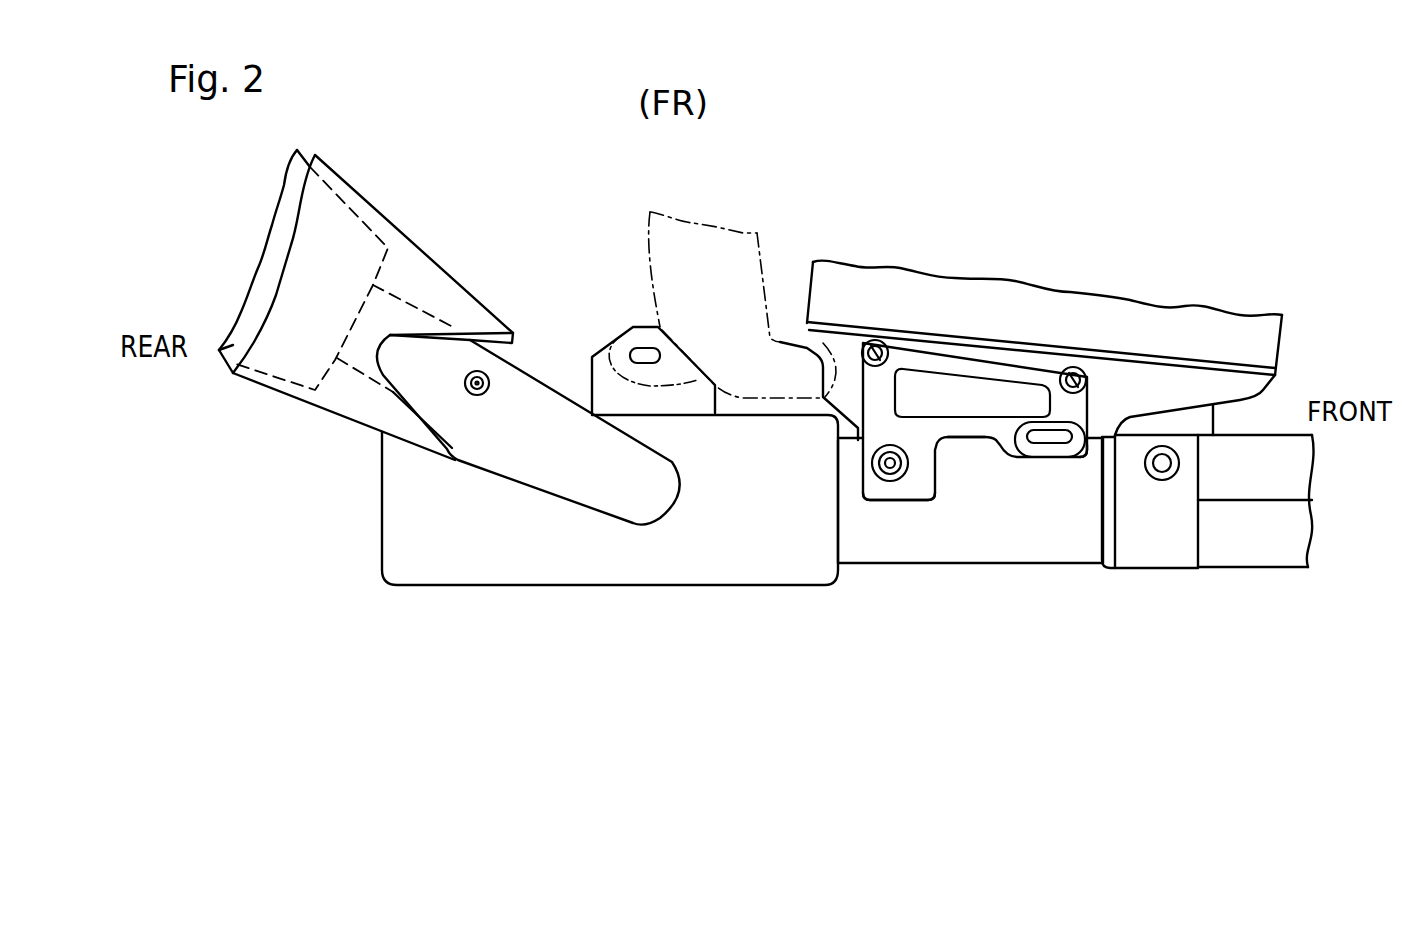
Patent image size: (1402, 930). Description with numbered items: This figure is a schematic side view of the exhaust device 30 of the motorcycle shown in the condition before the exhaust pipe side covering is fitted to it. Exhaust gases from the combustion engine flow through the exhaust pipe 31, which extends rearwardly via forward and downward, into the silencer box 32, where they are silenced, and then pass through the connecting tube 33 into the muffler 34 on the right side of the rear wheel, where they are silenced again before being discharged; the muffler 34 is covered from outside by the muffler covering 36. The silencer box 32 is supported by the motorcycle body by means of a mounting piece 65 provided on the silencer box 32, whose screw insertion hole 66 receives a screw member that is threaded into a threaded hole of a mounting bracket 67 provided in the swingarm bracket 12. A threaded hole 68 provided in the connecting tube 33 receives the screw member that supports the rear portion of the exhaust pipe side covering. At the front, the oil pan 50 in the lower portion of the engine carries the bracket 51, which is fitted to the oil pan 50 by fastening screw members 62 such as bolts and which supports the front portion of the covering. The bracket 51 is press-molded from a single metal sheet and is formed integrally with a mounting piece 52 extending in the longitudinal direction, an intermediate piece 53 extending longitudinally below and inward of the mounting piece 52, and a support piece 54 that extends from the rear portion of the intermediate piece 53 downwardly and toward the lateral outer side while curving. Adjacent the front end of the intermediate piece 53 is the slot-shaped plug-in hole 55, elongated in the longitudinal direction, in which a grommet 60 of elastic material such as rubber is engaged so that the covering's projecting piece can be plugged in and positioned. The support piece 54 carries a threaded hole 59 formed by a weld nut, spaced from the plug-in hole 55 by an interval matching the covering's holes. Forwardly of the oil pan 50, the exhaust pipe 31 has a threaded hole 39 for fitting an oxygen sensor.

The swingarm bracket 12 is at (678, 247).
The exhaust device 30 is at (960, 566).
The exhaust pipe 31 is at (927, 533).
The silencer box 32 is at (623, 570).
The connecting tube 33 is at (543, 458).
The muffler 34 is at (233, 346).
The muffler covering 36 is at (438, 277).
The threaded hole 39 is at (1162, 470).
The oil pan 50 is at (827, 340).
The bracket 51 is at (993, 358).
The mounting piece 52 is at (943, 365).
The intermediate piece 53 is at (967, 430).
The support piece 54 is at (873, 491).
The plug-in hole 55 is at (1043, 444).
The threaded hole 59 is at (890, 470).
The grommet 60 is at (1065, 444).
The screw member 62 is at (876, 346).
The mounting piece 65 is at (603, 387).
The screw insertion hole 66 is at (636, 350).
The mounting bracket 67 is at (592, 352).
The threaded hole 68 is at (477, 395).